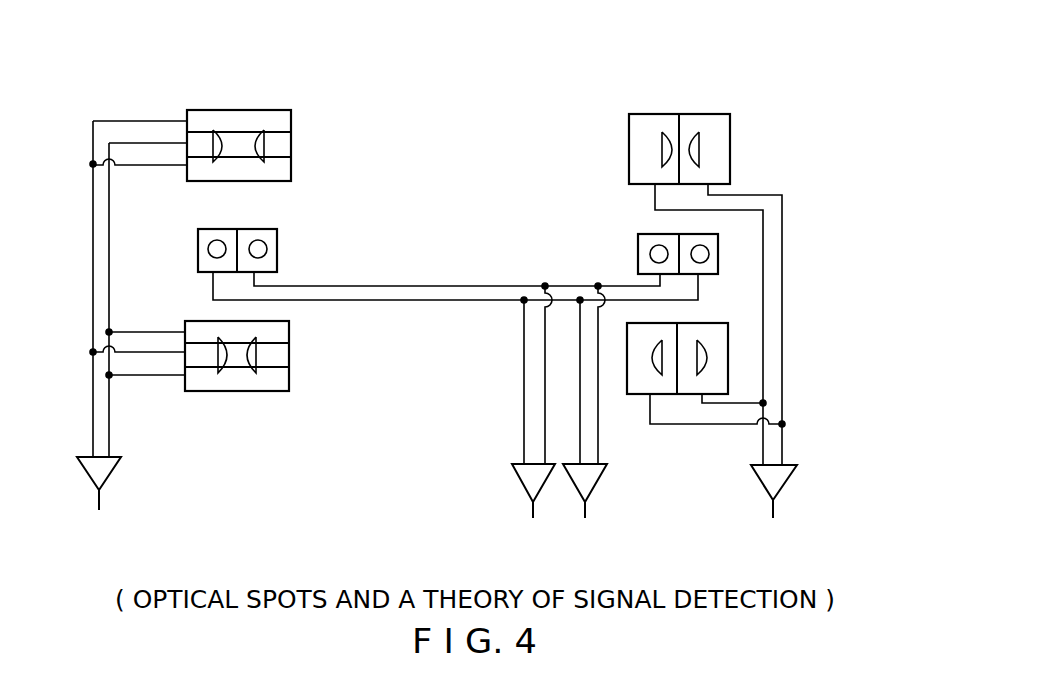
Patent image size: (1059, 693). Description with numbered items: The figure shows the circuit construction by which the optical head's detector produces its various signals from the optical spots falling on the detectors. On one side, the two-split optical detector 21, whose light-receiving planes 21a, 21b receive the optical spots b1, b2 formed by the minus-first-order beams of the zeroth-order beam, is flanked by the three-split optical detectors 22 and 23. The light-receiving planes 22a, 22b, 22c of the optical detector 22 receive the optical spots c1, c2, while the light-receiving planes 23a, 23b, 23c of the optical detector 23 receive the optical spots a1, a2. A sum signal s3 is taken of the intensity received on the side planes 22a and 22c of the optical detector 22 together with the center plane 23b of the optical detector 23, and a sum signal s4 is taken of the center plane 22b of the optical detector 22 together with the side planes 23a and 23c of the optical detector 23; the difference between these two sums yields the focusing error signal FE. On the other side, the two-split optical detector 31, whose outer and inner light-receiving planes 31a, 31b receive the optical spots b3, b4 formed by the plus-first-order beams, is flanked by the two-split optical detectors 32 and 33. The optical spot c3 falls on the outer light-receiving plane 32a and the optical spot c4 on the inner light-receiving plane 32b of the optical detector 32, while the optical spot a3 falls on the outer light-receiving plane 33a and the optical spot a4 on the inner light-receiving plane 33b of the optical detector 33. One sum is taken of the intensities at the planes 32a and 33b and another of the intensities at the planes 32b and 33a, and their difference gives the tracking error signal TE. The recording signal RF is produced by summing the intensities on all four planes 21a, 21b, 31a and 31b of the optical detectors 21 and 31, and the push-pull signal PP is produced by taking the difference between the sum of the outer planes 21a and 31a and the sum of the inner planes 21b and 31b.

The optical detector 21 is at (364, 220).
The outer light-receiving plane 21a is at (225, 266).
The inner light-receiving plane 21b is at (272, 262).
The optical detector 22 is at (397, 92).
The light-receiving plane 22a is at (293, 127).
The light-receiving plane 22b is at (293, 148).
The light-receiving plane 22c is at (293, 170).
The optical detector 23 is at (391, 310).
The light-receiving plane 23a is at (290, 340).
The light-receiving plane 23b is at (290, 362).
The light-receiving plane 23c is at (290, 388).
The optical detector 31 is at (553, 180).
The outer light-receiving plane 31a is at (670, 238).
The inner light-receiving plane 31b is at (690, 237).
The optical detector 32 is at (558, 20).
The outer light-receiving plane 32a is at (702, 120).
The inner light-receiving plane 32b is at (677, 117).
The optical detector 33 is at (857, 325).
The outer light-receiving plane 33a is at (717, 367).
The inner light-receiving plane 33b is at (668, 387).
The optical spot a1 is at (215, 372).
The optical spot a2 is at (253, 373).
The optical spot a3 is at (710, 342).
The optical spot a4 is at (657, 373).
The optical spot b1 is at (199, 248).
The optical spot b2 is at (276, 255).
The optical spot b3 is at (718, 253).
The optical spot b4 is at (647, 255).
The optical spot c1 is at (199, 128).
The optical spot c2 is at (273, 128).
The optical spot c3 is at (707, 138).
The optical spot c4 is at (673, 137).
The sum signal s3 is at (393, 448).
The sum signal s4 is at (478, 451).
The focusing error signal FE is at (115, 485).
The PP signal PP is at (516, 491).
The RF signal RF is at (600, 491).
The tracking error signal TE is at (790, 491).